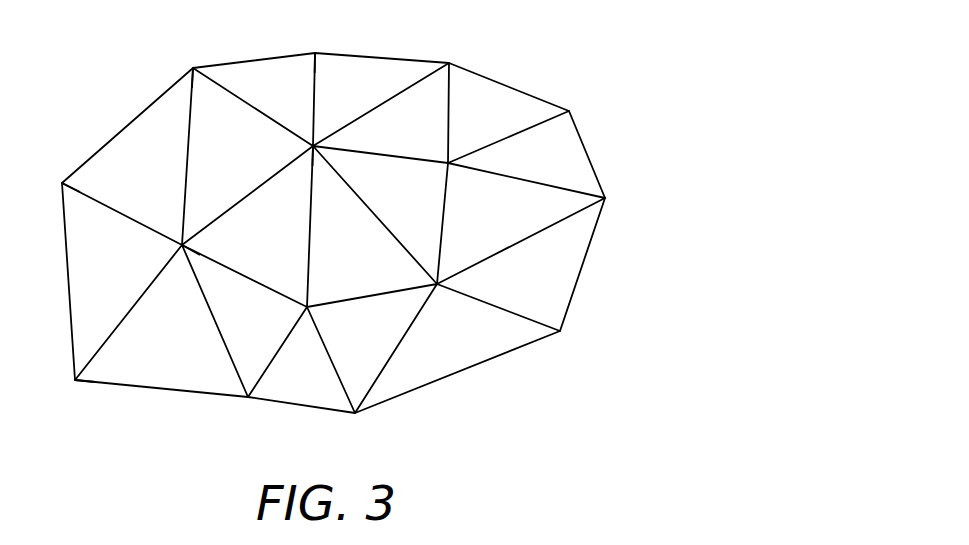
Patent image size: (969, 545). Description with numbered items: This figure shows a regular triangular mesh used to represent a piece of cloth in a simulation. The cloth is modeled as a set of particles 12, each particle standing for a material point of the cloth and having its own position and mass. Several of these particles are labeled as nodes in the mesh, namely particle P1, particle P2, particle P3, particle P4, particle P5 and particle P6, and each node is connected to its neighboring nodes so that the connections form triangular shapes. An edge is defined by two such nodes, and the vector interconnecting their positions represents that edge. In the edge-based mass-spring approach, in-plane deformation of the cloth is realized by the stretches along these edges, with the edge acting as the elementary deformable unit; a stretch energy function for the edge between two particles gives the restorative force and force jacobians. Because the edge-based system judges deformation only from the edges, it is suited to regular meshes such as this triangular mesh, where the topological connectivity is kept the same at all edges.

The particle 12 is at (449, 63).
The particle P1 is at (54, 178).
The particle P2 is at (191, 63).
The particle P3 is at (170, 250).
The particle P4 is at (71, 396).
The particle P5 is at (313, 45).
The particle P6 is at (325, 136).